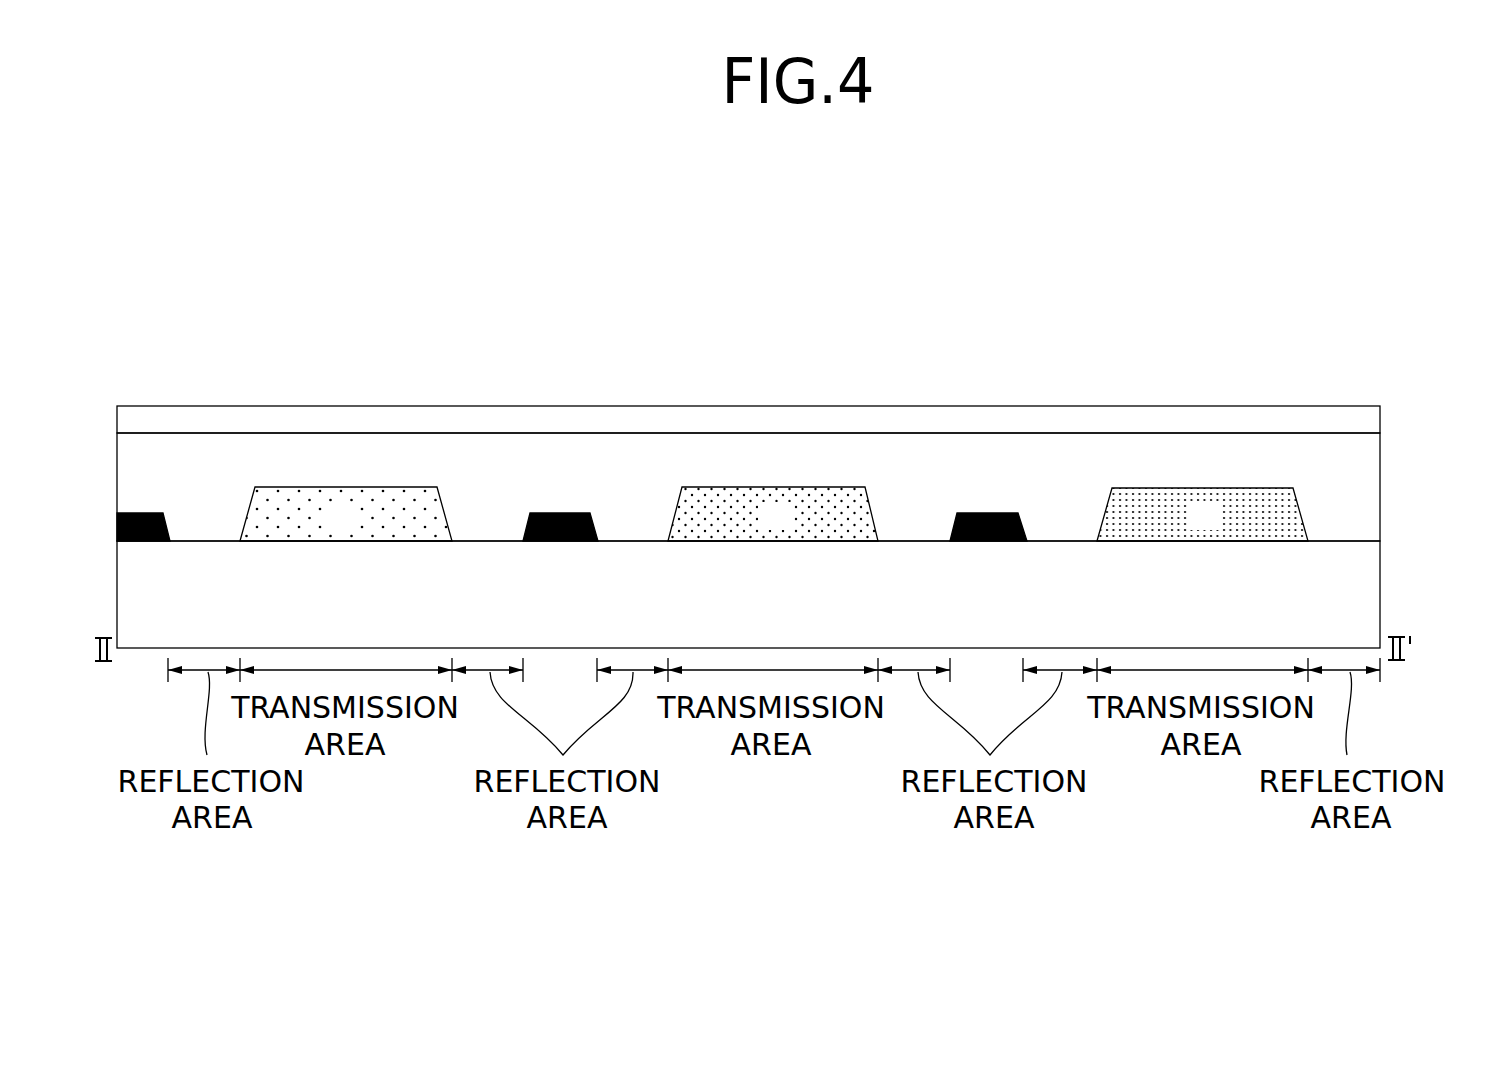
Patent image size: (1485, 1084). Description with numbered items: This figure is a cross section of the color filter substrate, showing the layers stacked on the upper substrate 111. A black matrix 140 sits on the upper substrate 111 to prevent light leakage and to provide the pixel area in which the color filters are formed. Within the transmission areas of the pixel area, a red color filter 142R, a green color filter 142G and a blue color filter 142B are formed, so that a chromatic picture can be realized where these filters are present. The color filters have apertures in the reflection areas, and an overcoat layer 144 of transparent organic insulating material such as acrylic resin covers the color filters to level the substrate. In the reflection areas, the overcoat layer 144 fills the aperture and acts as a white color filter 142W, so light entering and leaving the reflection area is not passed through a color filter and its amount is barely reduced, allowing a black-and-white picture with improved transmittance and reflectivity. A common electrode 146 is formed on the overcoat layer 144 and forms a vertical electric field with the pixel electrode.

The upper substrate 111 is at (1378, 593).
The black matrix 140 is at (558, 542).
The white color filter 142W is at (198, 527).
The red color filter 142R is at (413, 522).
The green color filter 142G is at (708, 523).
The blue color filter 142B is at (1272, 523).
The overcoat layer 144 is at (1378, 484).
The common electrode 146 is at (1378, 427).